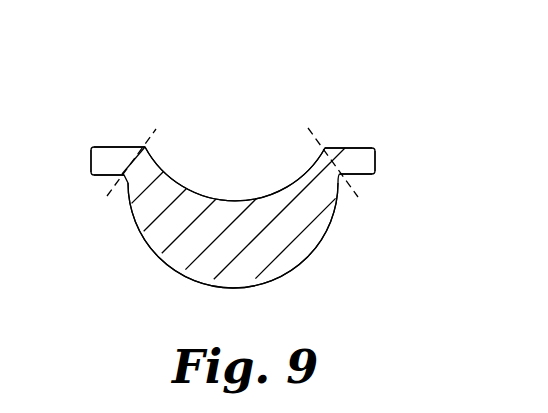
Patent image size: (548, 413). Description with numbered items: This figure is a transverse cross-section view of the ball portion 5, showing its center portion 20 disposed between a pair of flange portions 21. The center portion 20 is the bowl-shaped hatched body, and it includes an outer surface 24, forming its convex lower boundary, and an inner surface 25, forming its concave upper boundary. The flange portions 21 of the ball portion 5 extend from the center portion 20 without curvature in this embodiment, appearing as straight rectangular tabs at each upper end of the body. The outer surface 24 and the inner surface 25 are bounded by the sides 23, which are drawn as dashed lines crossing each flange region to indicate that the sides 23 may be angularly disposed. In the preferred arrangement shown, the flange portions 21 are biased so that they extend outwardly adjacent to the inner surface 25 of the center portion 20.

The ball portion 5 is at (390, 139).
The center portion 20 is at (182, 245).
The flange portions 21 is at (106, 146).
The sides 23 is at (150, 128).
The outer surface 24 is at (322, 235).
The inner surface 25 is at (265, 195).